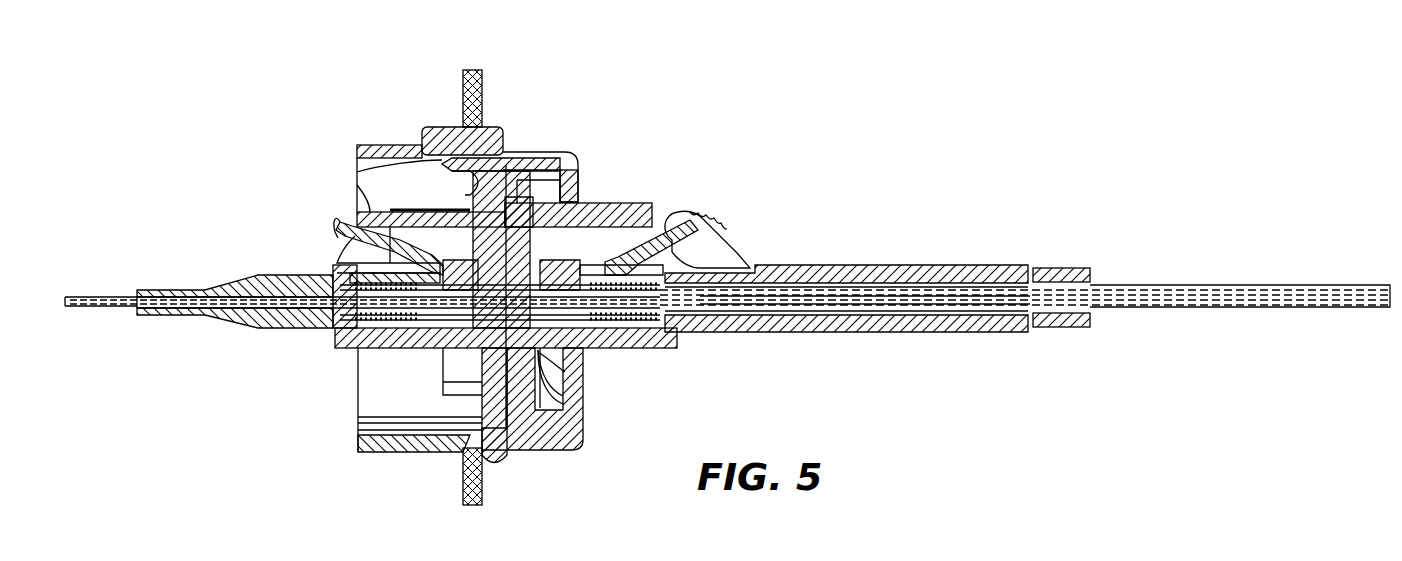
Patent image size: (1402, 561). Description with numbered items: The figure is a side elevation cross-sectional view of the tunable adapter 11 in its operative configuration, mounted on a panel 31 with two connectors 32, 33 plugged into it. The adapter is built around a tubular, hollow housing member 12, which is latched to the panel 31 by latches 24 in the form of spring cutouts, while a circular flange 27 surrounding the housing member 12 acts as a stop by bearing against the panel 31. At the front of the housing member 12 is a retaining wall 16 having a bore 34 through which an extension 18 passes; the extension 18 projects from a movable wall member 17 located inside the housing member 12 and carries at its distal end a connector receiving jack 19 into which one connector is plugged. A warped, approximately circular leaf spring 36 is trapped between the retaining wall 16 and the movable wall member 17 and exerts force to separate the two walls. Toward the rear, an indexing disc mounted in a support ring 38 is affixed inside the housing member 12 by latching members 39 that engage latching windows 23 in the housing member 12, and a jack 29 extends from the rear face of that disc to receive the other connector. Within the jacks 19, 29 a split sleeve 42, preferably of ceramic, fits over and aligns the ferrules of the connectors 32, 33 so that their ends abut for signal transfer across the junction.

The tunable adapter 11 is at (577, 73).
The housing member 12 is at (380, 143).
The retaining wall 16 is at (589, 403).
The movable wall member 17 is at (575, 359).
The extension 18 is at (593, 209).
The connector receiving jack 19 is at (651, 206).
The latching windows 23 is at (550, 154).
The latches 24 is at (438, 458).
The circular flange 27 is at (508, 459).
The jack 29 is at (359, 205).
The panel 31 is at (481, 97).
The connector 32 is at (736, 337).
The connector 33 is at (284, 331).
The bore 34 is at (546, 356).
The leaf spring 36 is at (556, 373).
The support ring 38 is at (463, 178).
The latching members 39 is at (440, 165).
The split sleeve 42 is at (499, 258).